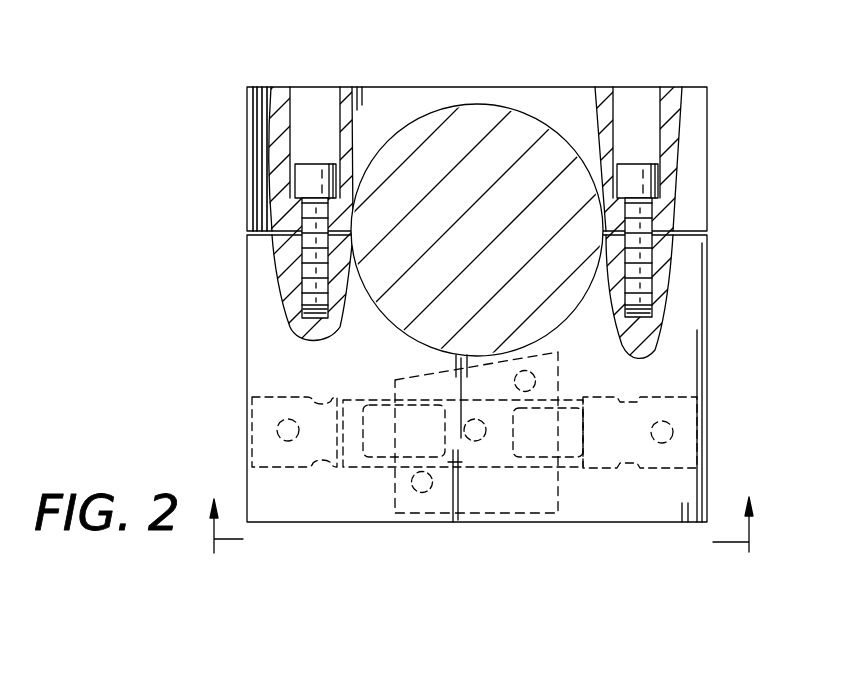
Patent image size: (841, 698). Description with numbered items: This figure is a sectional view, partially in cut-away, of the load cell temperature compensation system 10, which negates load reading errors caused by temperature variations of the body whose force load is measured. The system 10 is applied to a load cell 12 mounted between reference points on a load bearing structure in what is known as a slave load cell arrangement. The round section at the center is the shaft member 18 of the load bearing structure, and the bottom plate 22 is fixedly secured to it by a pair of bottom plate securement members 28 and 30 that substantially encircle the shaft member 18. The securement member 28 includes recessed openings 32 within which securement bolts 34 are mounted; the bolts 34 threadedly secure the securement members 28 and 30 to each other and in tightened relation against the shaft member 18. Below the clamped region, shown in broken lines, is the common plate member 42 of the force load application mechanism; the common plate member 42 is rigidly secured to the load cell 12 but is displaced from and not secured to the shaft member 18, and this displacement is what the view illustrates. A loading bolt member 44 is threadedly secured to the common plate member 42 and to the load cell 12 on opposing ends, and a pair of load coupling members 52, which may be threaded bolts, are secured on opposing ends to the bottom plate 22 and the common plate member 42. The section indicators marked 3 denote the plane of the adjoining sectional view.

The load cell temperature compensation system 10 is at (506, 80).
The load cell 12 is at (690, 418).
The shaft member 18 is at (499, 212).
The bottom plate 22 is at (709, 117).
The bottom plate securement member 28 is at (247, 178).
The bottom plate securement member 30 is at (246, 385).
The recessed openings 32 is at (338, 98).
The securement bolts 34 is at (308, 172).
The common plate member 42 is at (550, 368).
The loading bolt member 44 is at (481, 439).
The load coupling members 52 is at (536, 382).
The section line 3- 3 is at (479, 510).